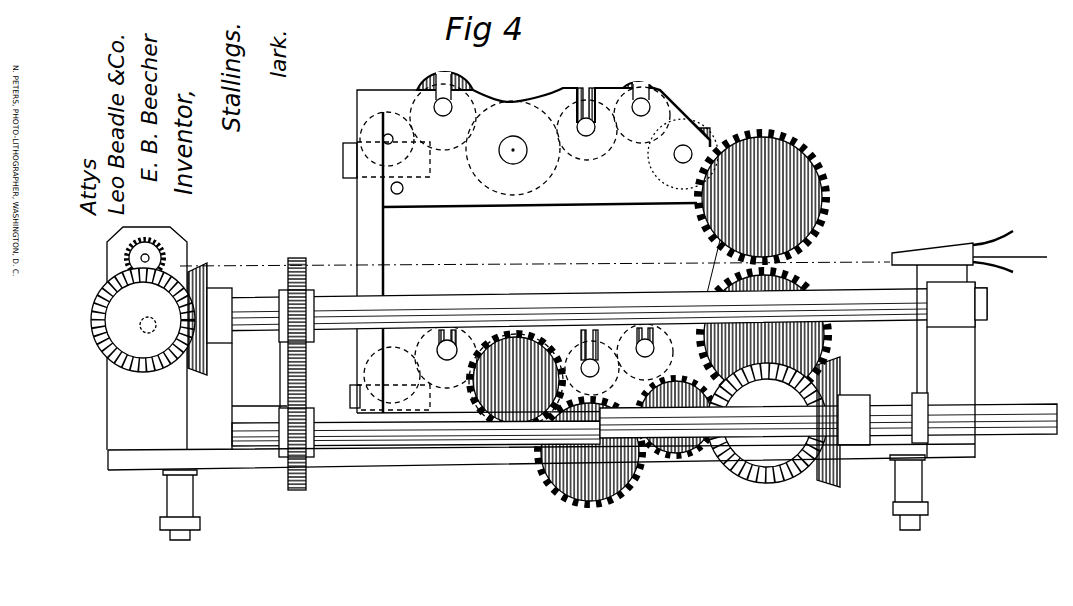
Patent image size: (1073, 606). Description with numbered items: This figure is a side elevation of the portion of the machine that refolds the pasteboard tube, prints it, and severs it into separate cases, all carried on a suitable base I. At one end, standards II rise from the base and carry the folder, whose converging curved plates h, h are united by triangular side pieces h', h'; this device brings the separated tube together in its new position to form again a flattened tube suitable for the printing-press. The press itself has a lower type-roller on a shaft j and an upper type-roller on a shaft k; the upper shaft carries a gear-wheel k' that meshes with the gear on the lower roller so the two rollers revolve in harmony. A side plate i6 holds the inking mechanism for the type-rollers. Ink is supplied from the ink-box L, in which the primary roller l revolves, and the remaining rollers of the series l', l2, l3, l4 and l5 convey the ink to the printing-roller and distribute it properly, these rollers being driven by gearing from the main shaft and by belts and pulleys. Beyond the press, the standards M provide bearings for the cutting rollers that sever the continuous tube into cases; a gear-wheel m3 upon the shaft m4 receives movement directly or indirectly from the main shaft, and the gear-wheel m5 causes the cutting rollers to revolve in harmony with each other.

The ink-box L is at (343, 162).
The primary roller l is at (538, 117).
The ink roller l' is at (444, 229).
The ink roller l2 is at (513, 137).
The ink roller l3 is at (588, 228).
The ink roller l4 is at (643, 216).
The ink roller l5 is at (706, 130).
The side plate i6 is at (656, 154).
The gear-wheel k' is at (775, 197).
The shaft j is at (825, 350).
The base I is at (480, 467).
The standards II is at (941, 361).
The standard M is at (259, 374).
The gear-wheel m3 is at (105, 338).
The shaft m4 is at (147, 318).
The gear-wheel m5 is at (162, 253).
The converging curved plate h is at (1010, 251).
The triangular side piece h' is at (932, 247).
The shaft k is at (920, 418).